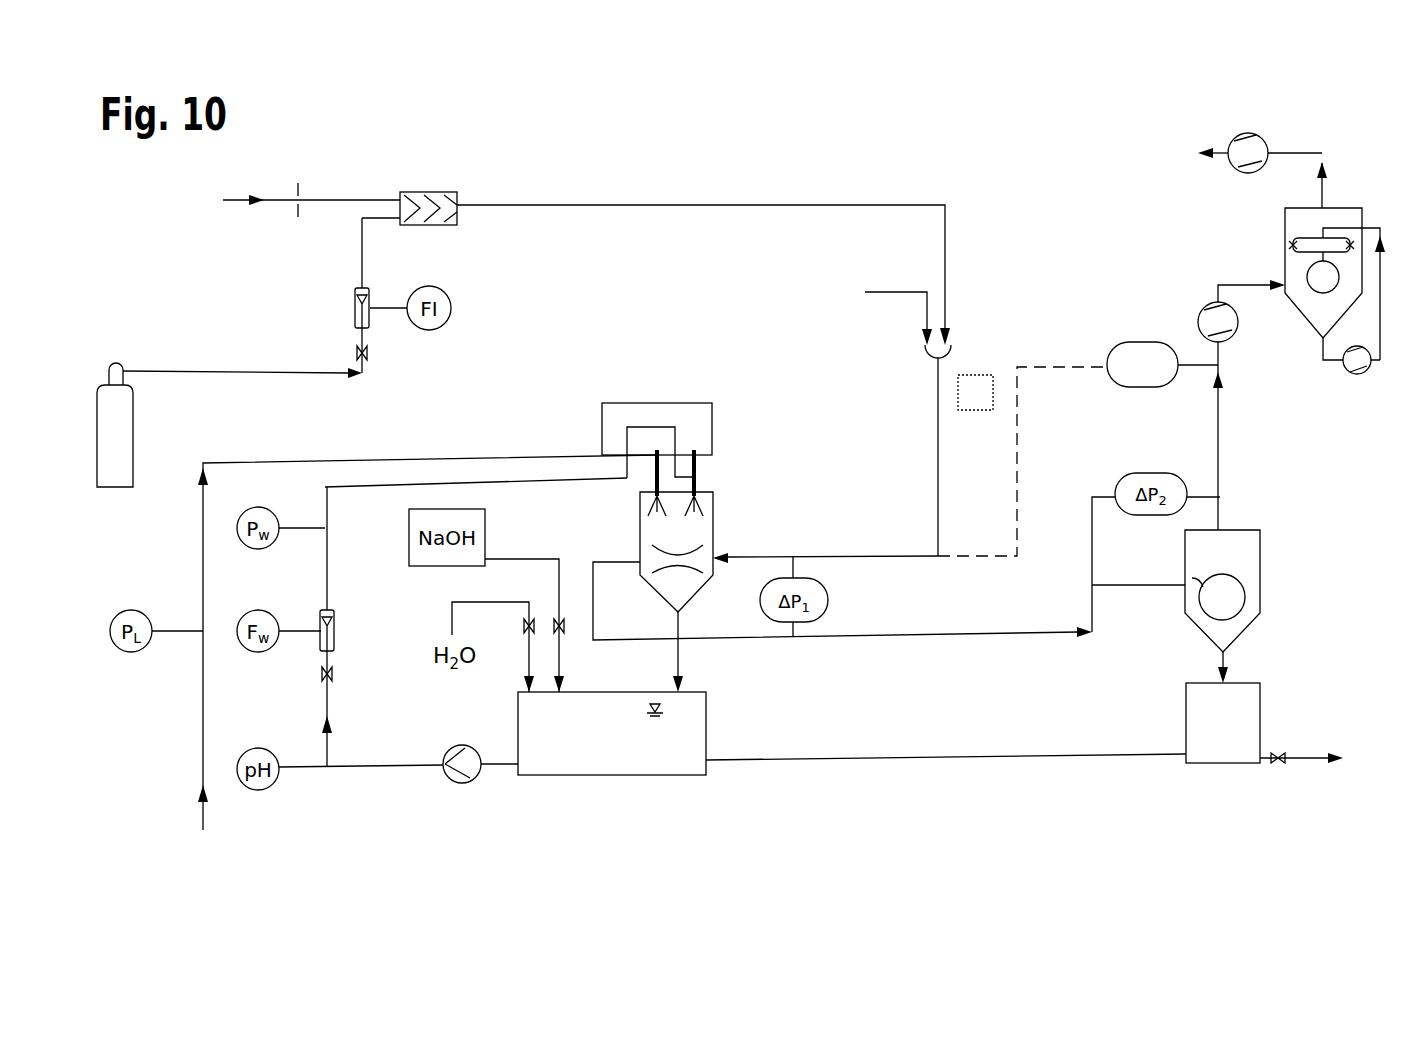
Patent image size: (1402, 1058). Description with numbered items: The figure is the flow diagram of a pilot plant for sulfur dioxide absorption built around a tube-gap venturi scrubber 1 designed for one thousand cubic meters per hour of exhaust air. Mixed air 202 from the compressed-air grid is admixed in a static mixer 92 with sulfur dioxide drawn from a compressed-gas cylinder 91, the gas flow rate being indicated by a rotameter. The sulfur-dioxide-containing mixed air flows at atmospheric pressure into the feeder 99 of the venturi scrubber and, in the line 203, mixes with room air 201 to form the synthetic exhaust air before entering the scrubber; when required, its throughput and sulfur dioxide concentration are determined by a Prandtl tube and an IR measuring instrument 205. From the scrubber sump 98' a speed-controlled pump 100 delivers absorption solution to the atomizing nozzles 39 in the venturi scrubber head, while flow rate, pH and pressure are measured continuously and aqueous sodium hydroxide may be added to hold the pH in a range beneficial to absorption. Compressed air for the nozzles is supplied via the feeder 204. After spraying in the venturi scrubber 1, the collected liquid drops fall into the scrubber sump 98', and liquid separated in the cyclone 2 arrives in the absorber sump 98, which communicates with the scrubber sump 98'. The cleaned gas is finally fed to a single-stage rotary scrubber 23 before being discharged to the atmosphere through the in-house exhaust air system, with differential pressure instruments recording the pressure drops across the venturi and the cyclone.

The mixed air 202 is at (239, 199).
The static mixer 92 is at (428, 192).
The compressed-gas cylinder 91 is at (124, 457).
The feeder 204 is at (203, 728).
The atomizing nozzles 39 is at (694, 477).
The venturi scrubber 1 is at (712, 525).
The line 203 is at (875, 556).
The room air 201 is at (891, 292).
The feeder 99 is at (939, 392).
The IR measuring instrument 205 is at (1140, 377).
The single-stage rotary scrubber 23 is at (1345, 210).
The cyclone 2 is at (1240, 540).
The absorber sump 98 is at (1024, 749).
The speed-controlled pump 100 is at (462, 783).
The scrubber sump 98' is at (612, 759).